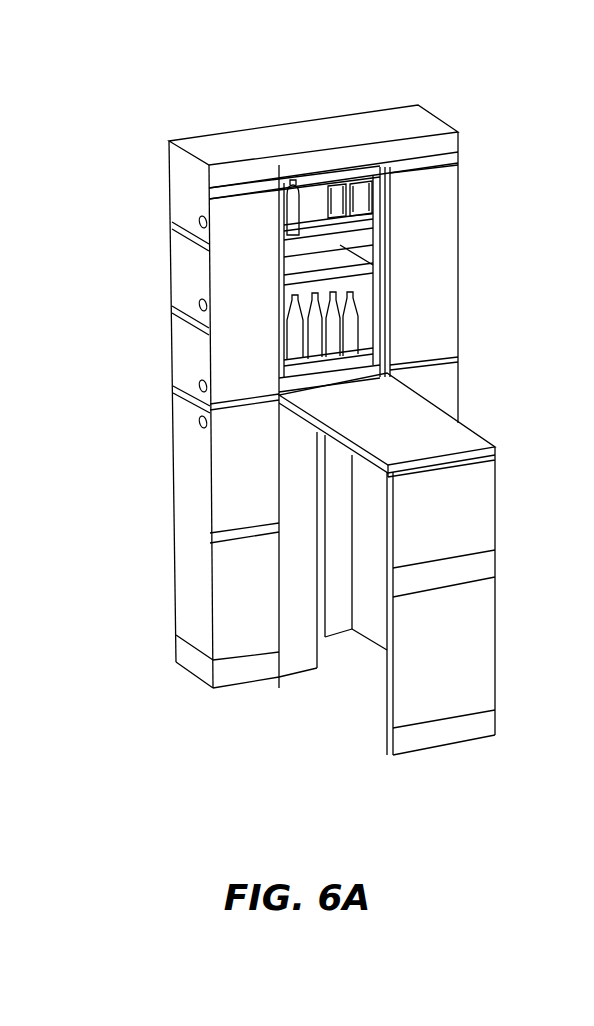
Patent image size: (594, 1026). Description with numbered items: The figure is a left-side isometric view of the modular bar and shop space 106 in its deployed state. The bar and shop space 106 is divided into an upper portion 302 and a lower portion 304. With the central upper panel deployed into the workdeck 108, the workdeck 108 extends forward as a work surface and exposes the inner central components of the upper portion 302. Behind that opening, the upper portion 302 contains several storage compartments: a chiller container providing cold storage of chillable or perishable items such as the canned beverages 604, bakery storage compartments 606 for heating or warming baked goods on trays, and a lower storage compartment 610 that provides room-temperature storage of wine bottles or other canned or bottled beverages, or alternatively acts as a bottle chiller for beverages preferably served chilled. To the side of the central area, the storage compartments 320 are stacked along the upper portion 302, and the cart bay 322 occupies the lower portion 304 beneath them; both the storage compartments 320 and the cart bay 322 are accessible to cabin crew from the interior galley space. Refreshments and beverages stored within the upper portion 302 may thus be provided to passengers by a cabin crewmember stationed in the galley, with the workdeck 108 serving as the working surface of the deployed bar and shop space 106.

The bar and shop space 106 is at (95, 113).
The upper portion 302 is at (93, 220).
The storage compartments 320 is at (183, 342).
The cart bay 322 is at (197, 463).
The lower portion 304 is at (100, 604).
The workdeck 108 is at (413, 440).
The canned beverages 604 is at (360, 188).
The bakery storage compartments 606 is at (318, 261).
The lower storage compartment 610 is at (362, 325).